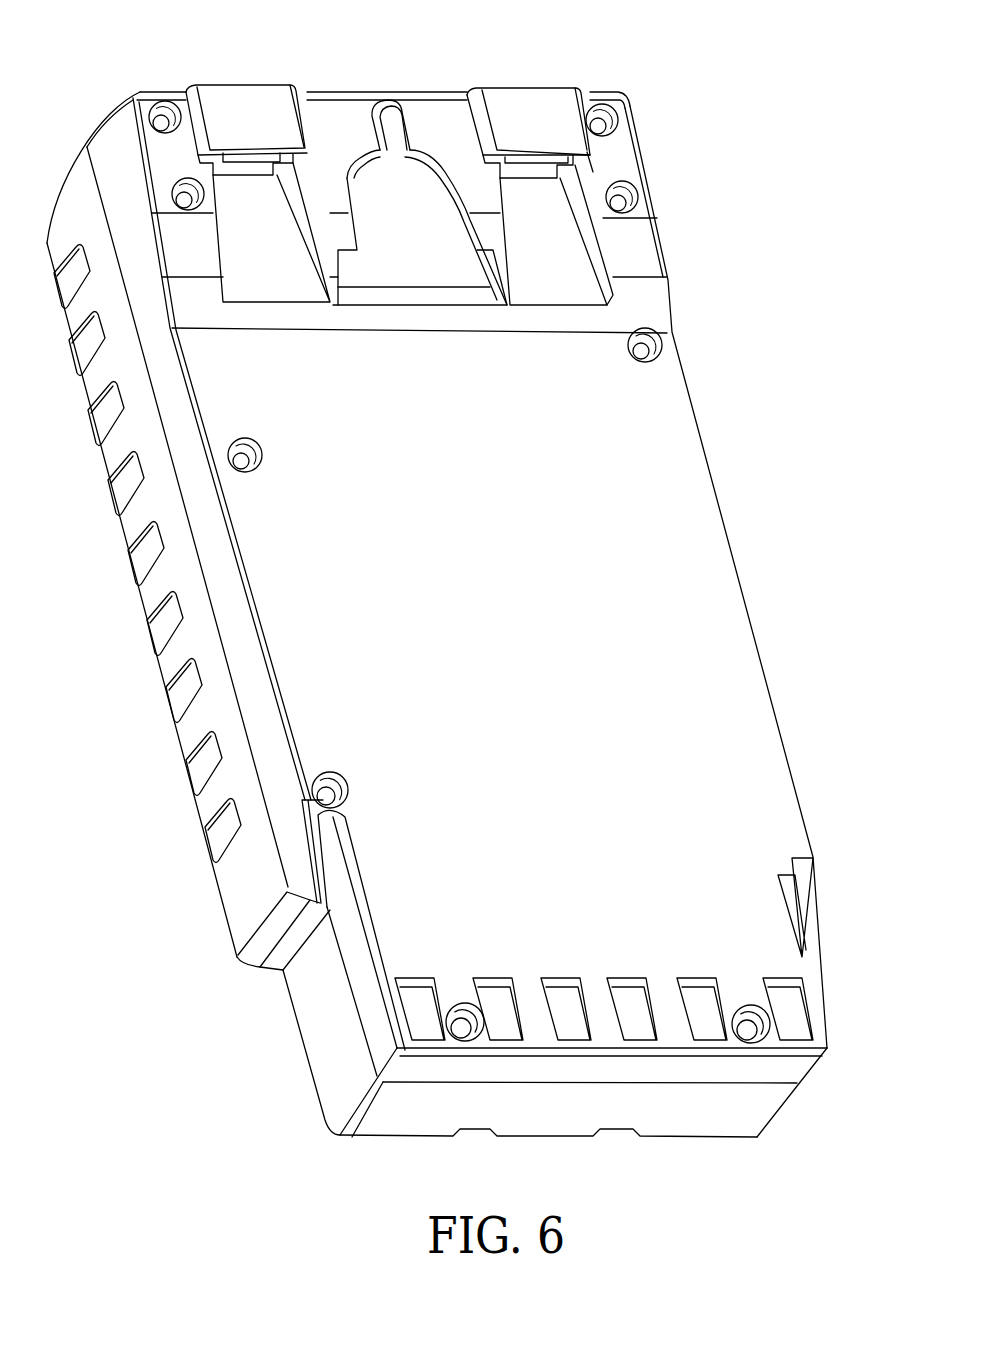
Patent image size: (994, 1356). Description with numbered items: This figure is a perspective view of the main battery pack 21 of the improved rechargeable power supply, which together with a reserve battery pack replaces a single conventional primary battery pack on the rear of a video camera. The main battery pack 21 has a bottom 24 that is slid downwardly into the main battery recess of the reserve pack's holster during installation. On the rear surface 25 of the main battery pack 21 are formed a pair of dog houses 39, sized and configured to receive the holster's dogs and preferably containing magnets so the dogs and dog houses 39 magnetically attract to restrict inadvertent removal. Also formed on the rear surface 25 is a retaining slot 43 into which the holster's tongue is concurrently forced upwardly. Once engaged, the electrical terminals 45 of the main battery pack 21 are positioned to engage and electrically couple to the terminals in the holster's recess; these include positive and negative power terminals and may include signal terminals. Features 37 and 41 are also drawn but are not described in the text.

The main battery pack 21 is at (742, 588).
The bottom 24 is at (720, 1115).
The rear surface 25 is at (323, 680).
The corner block 37 is at (338, 1037).
The dog houses 39 is at (521, 173).
The latch tab 41 is at (262, 157).
The retaining slot 43 is at (557, 237).
The electrical terminals 45 is at (793, 1015).